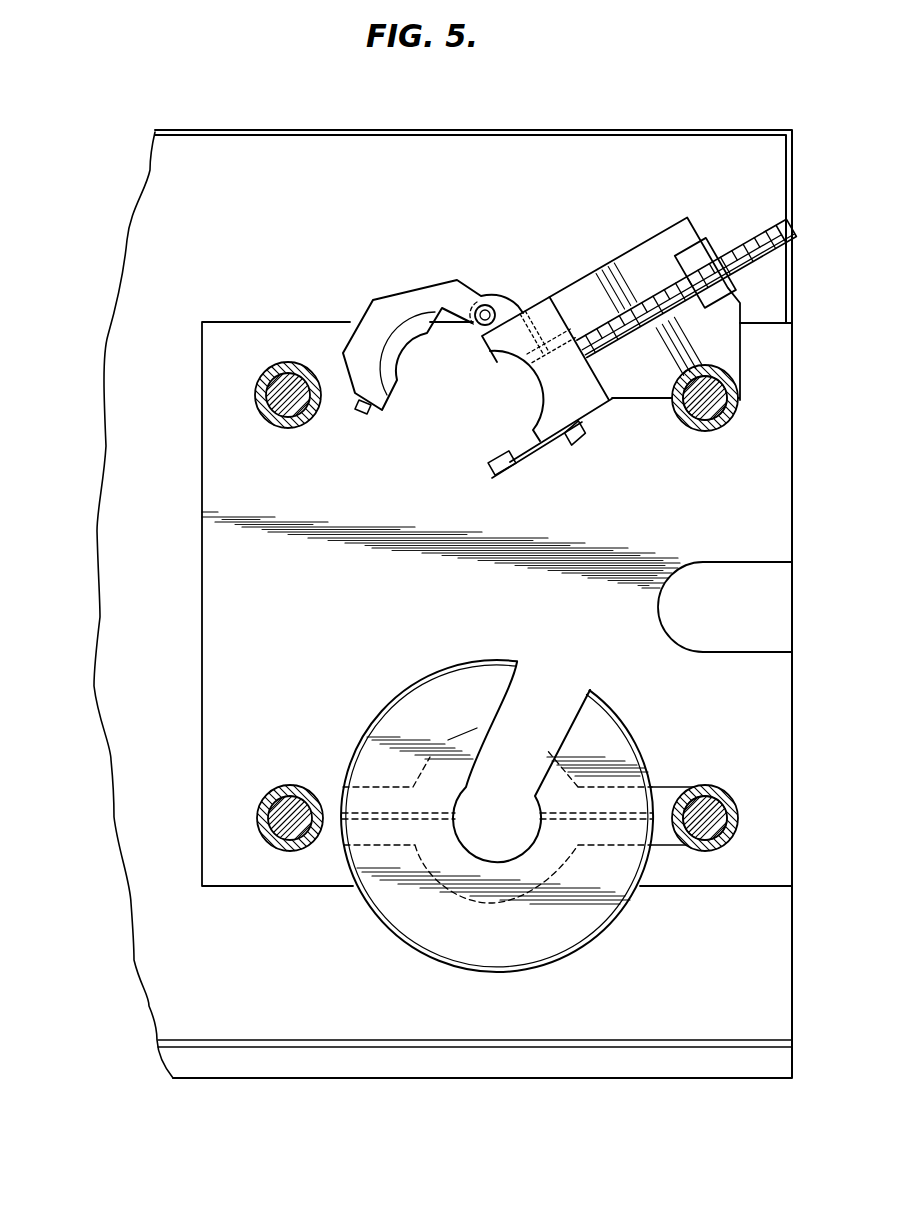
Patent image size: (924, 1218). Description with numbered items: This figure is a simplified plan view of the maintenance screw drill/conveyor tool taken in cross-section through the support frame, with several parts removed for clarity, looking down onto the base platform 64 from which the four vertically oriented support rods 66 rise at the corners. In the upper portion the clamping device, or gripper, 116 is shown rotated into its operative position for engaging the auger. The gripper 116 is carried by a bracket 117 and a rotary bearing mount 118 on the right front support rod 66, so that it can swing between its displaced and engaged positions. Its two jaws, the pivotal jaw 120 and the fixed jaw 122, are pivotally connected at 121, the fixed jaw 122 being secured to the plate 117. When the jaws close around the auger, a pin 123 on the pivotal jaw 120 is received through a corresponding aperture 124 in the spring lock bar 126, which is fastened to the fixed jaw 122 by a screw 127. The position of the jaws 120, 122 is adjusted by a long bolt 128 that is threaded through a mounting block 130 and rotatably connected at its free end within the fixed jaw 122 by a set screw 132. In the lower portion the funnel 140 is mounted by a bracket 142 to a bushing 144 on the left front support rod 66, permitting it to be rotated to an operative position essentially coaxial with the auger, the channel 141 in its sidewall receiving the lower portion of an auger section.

The base platform 64 is at (537, 130).
The support rods 66 is at (282, 415).
The clamping device 116 is at (447, 250).
The bracket 117 is at (728, 346).
The rotary bearing mount 118 is at (700, 433).
The pivotal jaw 120 is at (432, 283).
The pivotal connection 121 is at (481, 292).
The fixed jaw 122 is at (555, 317).
The pin 123 is at (368, 412).
The aperture 124 is at (511, 466).
The spring lock bar 126 is at (487, 472).
The screw 127 is at (576, 440).
The long bolt 128 is at (781, 212).
The mounting block 130 is at (701, 254).
The set screw 132 is at (521, 312).
The funnel 140 is at (393, 722).
The channel 141 is at (512, 686).
The bracket 142 is at (661, 838).
The bushing 144 is at (731, 797).